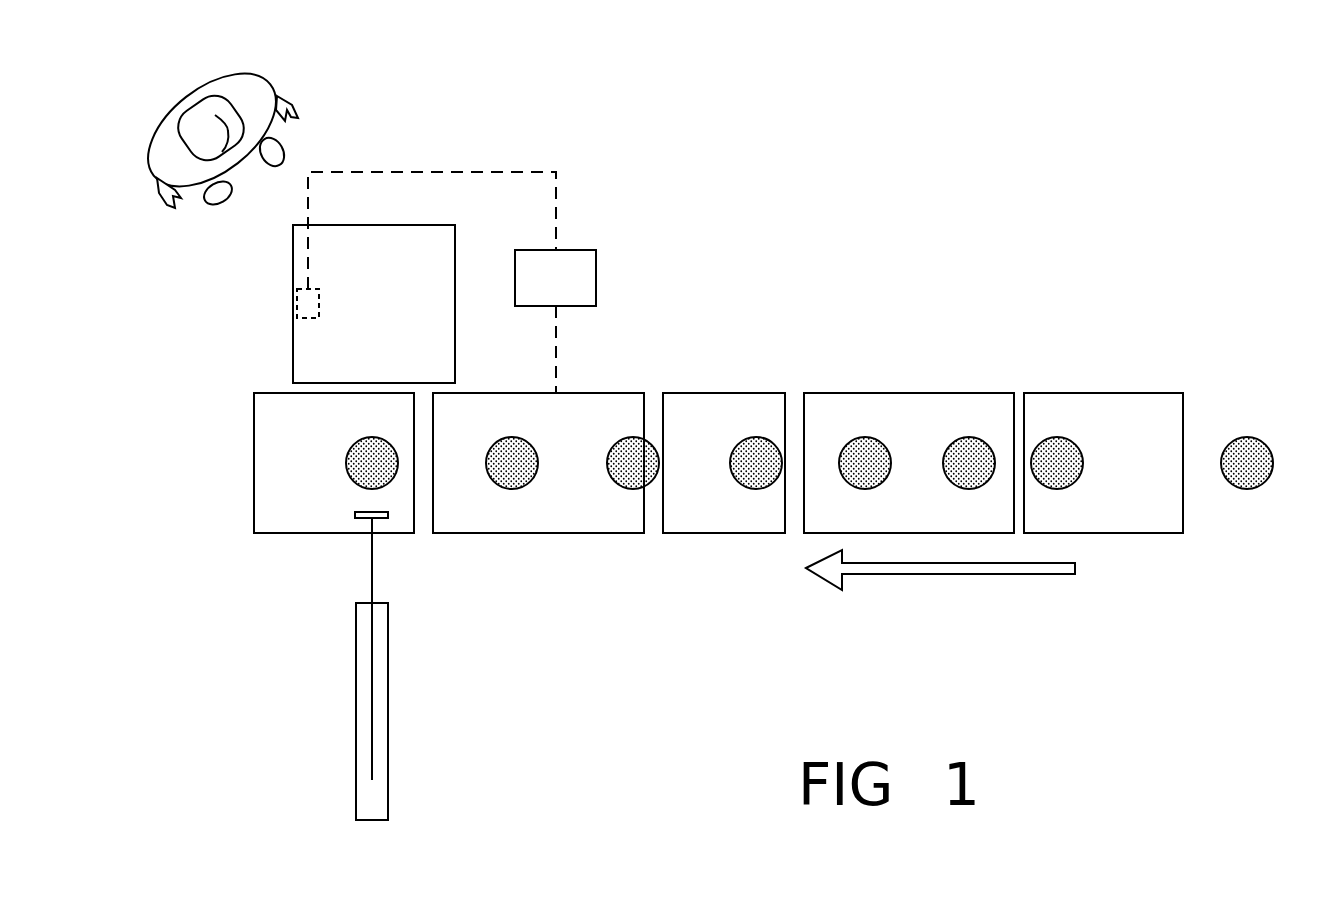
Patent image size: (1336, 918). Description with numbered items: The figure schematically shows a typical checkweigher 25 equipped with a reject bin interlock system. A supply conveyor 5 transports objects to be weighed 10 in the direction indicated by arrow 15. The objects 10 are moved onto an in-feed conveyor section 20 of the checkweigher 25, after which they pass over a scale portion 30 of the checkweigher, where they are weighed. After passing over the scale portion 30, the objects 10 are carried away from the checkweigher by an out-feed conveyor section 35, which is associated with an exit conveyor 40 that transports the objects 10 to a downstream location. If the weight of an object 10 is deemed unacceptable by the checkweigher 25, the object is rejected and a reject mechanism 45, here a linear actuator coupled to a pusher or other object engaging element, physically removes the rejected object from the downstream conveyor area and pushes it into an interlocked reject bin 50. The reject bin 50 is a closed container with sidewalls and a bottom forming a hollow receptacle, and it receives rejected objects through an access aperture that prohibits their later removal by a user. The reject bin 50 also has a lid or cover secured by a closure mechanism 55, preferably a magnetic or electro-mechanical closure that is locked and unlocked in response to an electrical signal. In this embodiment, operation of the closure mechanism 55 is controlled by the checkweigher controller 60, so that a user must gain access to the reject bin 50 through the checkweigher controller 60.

The supply conveyor 5 is at (1100, 392).
The objects to be weighed 10 is at (1265, 442).
The arrow 15 is at (932, 574).
The in-feed conveyor section 20 is at (901, 392).
The checkweigher 25 is at (822, 288).
The scale portion 30 is at (723, 392).
The out-feed conveyor section 35 is at (498, 533).
The exit conveyor 40 is at (254, 492).
The reject mechanism 45 is at (390, 673).
The reject bin 50 is at (293, 270).
The closure mechanism 55 is at (316, 322).
The checkweigher controller 60 is at (596, 268).